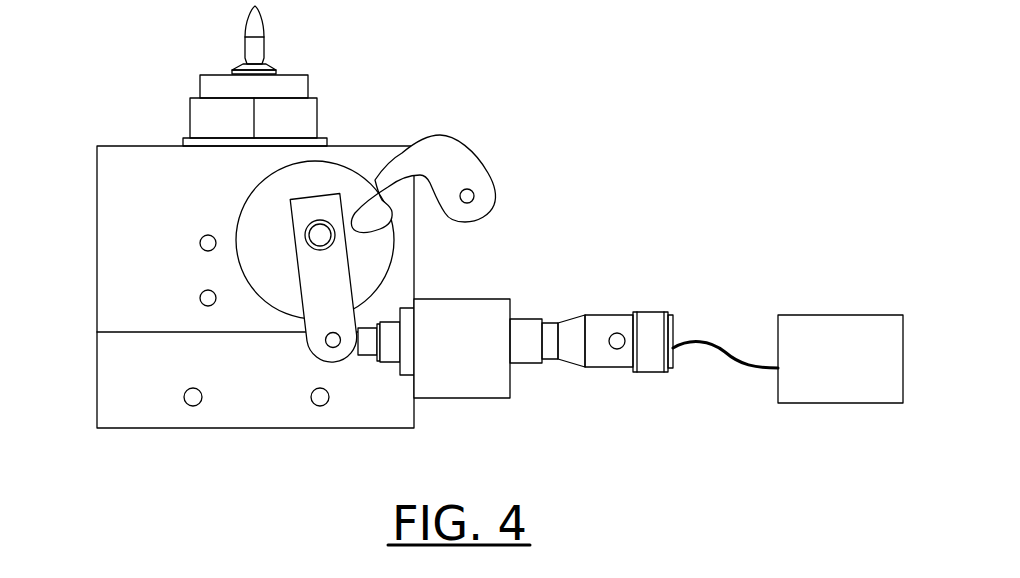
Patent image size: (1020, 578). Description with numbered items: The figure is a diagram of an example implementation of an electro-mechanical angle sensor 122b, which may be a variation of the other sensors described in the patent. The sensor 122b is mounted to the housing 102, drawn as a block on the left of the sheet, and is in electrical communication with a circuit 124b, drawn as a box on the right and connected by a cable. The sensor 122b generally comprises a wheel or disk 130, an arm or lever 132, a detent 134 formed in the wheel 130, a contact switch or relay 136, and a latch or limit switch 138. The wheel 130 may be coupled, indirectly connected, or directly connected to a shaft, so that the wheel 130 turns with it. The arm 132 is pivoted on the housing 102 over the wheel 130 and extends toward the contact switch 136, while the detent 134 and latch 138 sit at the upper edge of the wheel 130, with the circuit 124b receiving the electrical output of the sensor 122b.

The housing 102 is at (97, 200).
The electro-mechanical angle sensor 122b is at (510, 30).
The circuit 124b is at (848, 315).
The wheel 130 is at (342, 158).
The arm 132 is at (307, 353).
The detent 134 is at (385, 208).
The contact switch 136 is at (655, 311).
The latch 138 is at (494, 190).